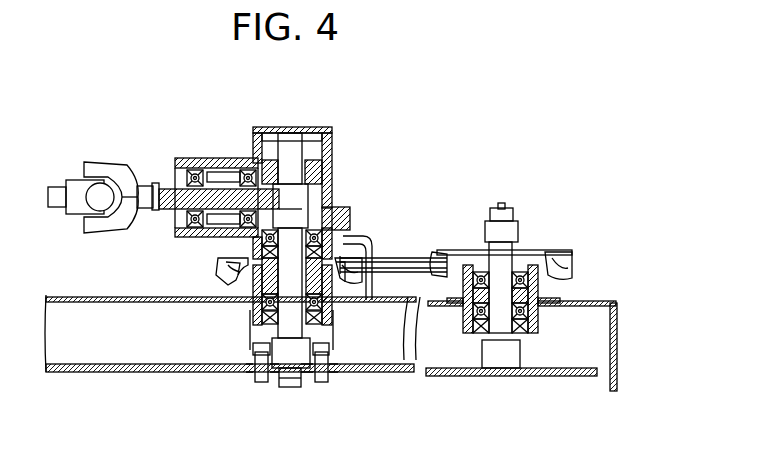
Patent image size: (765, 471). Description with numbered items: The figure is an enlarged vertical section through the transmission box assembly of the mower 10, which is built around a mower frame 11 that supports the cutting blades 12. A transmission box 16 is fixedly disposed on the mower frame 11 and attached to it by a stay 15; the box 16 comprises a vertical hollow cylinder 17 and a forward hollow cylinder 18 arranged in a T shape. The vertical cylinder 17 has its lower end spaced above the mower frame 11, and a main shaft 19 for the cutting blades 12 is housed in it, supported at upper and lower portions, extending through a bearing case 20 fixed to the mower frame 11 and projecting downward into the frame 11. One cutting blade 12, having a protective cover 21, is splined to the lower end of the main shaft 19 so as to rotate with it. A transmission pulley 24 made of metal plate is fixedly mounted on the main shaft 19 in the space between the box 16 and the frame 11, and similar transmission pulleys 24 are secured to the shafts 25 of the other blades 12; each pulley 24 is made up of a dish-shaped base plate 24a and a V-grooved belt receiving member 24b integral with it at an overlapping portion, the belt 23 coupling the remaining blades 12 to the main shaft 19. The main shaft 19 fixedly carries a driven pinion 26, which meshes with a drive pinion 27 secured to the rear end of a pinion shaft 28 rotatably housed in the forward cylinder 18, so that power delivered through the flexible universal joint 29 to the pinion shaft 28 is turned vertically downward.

The mower 10 is at (621, 334).
The mower frame 11 is at (590, 302).
The cutting blades 12 is at (197, 372).
The stay 15 is at (385, 243).
The transmission box 16 is at (332, 163).
The vertical hollow cylinder 17 is at (332, 180).
The forward hollow cylinder 18 is at (213, 158).
The main shaft 19 is at (288, 255).
The bearing case 20 is at (253, 318).
The protective cover 21 is at (335, 340).
The belt 23 is at (400, 252).
The transmission pulley 24 is at (240, 273).
The dish-shaped base plate 24a is at (363, 298).
The V-grooved belt receiving member 24b is at (398, 262).
The shafts 25 is at (498, 333).
The driven pinion 26 is at (325, 189).
The drive pinion 27 is at (253, 160).
The pinion shaft 28 is at (168, 190).
The flexible universal joint 29 is at (80, 174).